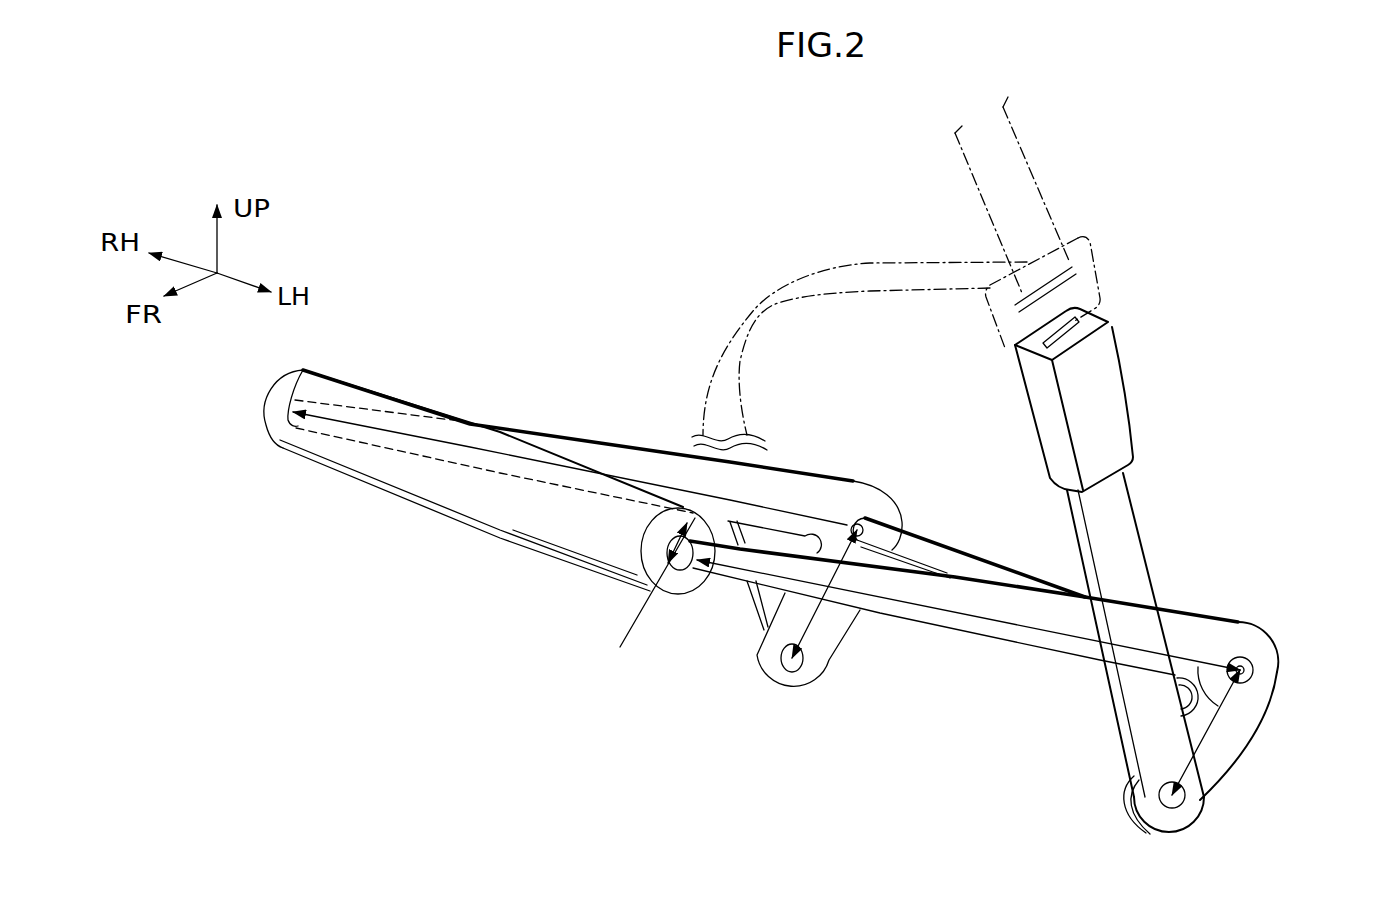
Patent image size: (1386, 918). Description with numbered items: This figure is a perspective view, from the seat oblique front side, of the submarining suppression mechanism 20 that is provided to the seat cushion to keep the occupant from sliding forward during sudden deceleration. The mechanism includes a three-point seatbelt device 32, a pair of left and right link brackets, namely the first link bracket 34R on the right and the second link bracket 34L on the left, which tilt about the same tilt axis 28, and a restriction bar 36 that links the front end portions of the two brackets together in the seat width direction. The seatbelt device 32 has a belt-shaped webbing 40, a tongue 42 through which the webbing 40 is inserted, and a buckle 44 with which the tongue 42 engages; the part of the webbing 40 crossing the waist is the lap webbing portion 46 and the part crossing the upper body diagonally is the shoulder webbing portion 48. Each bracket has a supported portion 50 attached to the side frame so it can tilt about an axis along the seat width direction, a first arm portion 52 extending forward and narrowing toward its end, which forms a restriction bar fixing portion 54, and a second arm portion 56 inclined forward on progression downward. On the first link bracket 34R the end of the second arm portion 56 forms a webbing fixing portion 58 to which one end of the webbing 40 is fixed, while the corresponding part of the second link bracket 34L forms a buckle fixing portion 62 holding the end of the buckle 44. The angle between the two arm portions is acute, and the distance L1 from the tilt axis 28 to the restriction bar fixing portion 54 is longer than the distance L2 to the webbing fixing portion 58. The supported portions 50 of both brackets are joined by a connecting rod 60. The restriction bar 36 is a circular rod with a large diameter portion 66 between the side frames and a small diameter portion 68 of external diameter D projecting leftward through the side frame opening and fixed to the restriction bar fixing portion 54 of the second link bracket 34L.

The submarining suppression mechanism 20 is at (363, 222).
The tilt axis 28 is at (1253, 668).
The three-point seatbelt device 32 is at (762, 254).
The first link bracket 34R is at (512, 423).
The second link bracket 34L is at (1045, 652).
The restriction bar 36 is at (377, 490).
The webbing 40 is at (1028, 160).
The tongue 42 is at (1097, 267).
The buckle 44 is at (1123, 376).
The lap webbing portion 46 is at (868, 261).
The shoulder webbing portion 48 is at (1043, 200).
The supported portion 50 is at (878, 503).
The first arm portion 52 is at (603, 440).
The restriction bar fixing portion 54 is at (303, 370).
The second arm portion 56 is at (863, 613).
The webbing fixing portion 58 is at (785, 688).
The connecting rod 60 is at (935, 545).
The buckle fixing portion 62 is at (1130, 800).
The large diameter portion 66 is at (457, 518).
The small diameter portion 68 is at (640, 547).
The distance from supported portion to restriction bar fixing portion L1 is at (688, 492).
The distance from supported portion to webbing fixing portion L2 is at (829, 655).
The external diameter of small diameter portion D is at (634, 625).